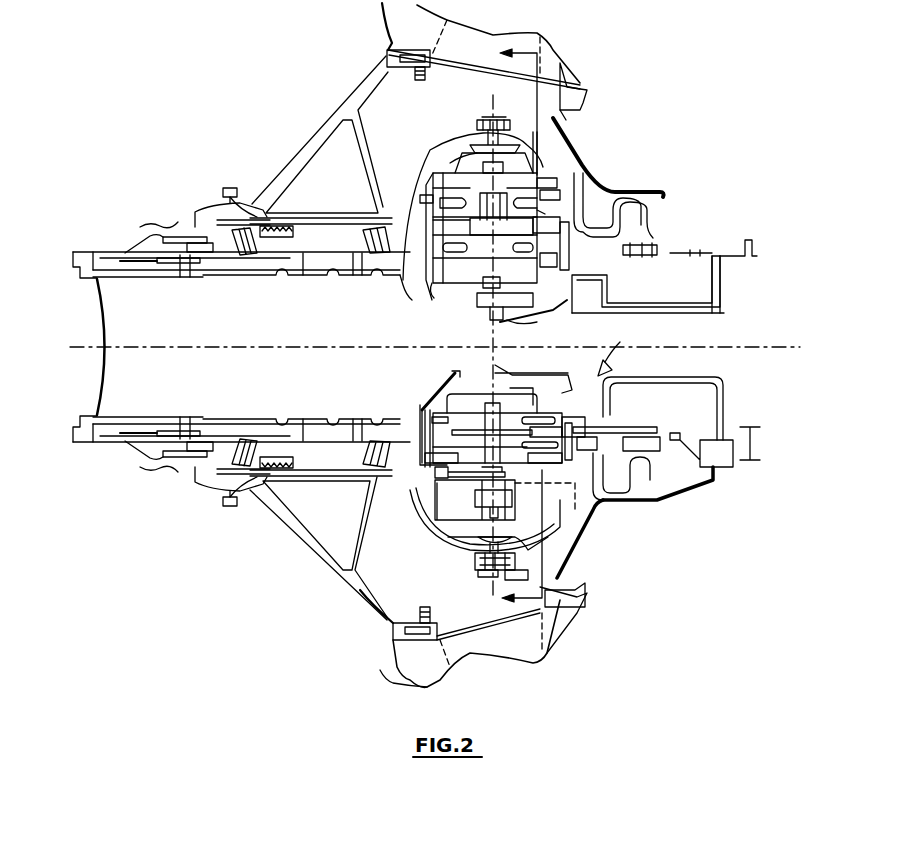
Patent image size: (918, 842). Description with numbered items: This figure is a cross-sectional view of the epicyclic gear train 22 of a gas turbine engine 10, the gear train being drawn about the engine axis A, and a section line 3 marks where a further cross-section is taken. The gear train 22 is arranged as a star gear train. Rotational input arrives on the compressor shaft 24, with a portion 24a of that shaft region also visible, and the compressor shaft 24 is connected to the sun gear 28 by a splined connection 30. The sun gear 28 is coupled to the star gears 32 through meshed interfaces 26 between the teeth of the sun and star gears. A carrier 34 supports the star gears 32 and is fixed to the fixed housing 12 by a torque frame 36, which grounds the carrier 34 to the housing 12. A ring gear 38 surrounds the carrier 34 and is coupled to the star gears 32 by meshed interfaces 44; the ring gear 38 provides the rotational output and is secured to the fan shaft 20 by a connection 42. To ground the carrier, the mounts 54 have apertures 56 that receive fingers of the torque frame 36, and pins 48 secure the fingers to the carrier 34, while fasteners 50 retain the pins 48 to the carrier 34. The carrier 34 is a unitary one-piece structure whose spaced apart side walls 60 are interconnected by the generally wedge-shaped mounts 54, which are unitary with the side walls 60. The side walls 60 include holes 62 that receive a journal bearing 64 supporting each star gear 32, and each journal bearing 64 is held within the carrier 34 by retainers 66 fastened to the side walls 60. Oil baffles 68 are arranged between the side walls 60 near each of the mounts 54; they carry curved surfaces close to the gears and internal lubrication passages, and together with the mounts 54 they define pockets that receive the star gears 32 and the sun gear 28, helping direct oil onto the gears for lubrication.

The gas turbine engine 10 is at (622, 83).
The fixed housing 12 is at (650, 222).
The fan shaft 20 is at (405, 293).
The epicyclic gear train 22 is at (436, 538).
The compressor shaft 24 is at (637, 310).
The duct post 24a is at (722, 305).
The meshed interfaces 26 is at (437, 305).
The sun gear 28 is at (477, 298).
The splined connection 30 is at (537, 324).
The star gears 32 is at (517, 272).
The carrier 34 is at (446, 500).
The torque frame 36 is at (587, 540).
The ring gear 38 is at (463, 155).
The connection 42 is at (477, 128).
The meshed interfaces 44 is at (452, 163).
The pins 48 is at (475, 530).
The fasteners 50 is at (443, 485).
The mounts 54 is at (598, 508).
The apertures 56 is at (448, 535).
The side walls 60 is at (412, 182).
The holes 62 is at (590, 155).
The journal bearing 64 is at (540, 213).
The retainers 66 is at (570, 255).
The oil baffles 68 is at (472, 443).
The section line 3 is at (512, 326).
The axis A is at (637, 350).